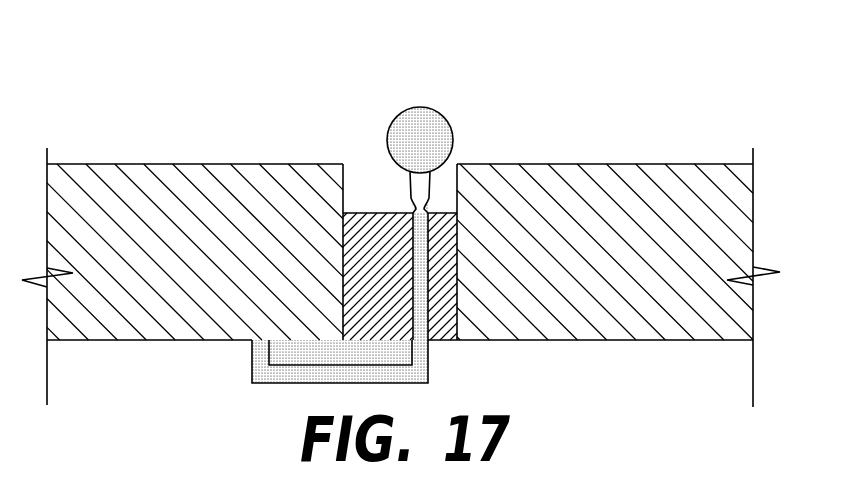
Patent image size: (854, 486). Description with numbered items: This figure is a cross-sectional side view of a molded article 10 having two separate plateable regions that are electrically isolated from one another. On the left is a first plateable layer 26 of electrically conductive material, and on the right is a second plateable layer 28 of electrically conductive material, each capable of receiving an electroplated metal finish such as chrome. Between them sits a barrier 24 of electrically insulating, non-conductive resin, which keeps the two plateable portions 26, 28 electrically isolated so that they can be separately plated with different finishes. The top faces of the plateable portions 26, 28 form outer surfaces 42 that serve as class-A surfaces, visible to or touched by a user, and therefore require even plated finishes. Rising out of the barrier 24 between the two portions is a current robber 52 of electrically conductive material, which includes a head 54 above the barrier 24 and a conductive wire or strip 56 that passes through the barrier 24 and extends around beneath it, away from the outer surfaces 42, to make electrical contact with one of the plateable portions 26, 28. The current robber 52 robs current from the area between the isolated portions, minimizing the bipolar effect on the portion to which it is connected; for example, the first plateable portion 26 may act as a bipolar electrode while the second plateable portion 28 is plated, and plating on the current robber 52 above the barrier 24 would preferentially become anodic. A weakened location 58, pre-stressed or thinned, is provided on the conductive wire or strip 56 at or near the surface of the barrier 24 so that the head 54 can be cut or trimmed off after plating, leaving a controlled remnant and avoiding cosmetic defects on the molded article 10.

The molded article 10 is at (73, 150).
The barrier 24 is at (377, 216).
The first plateable layer 26 is at (113, 188).
The second plateable layer 28 is at (680, 195).
The outer surface 42 is at (200, 165).
The current robber 52 is at (397, 126).
The head 54 is at (433, 110).
The conductive wire or strip 56 is at (428, 356).
The weakened location 58 is at (413, 212).